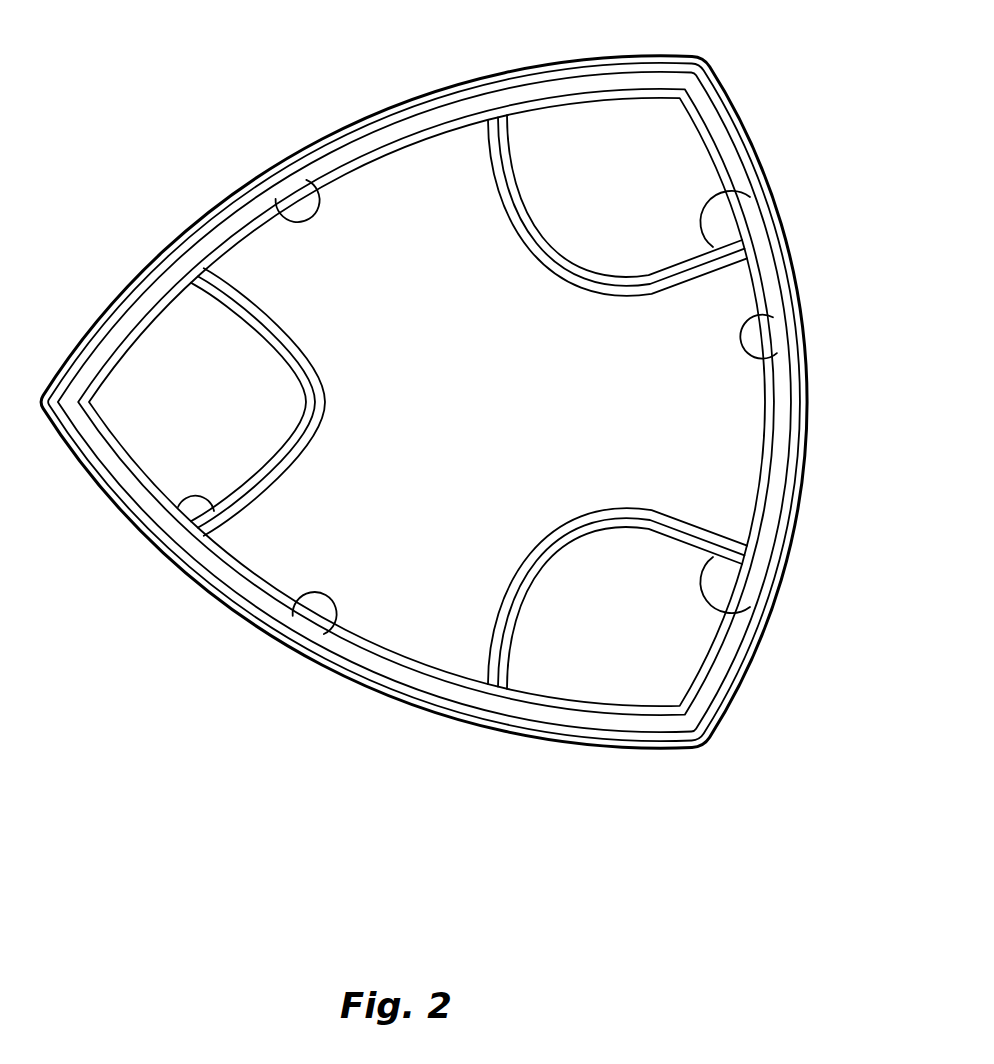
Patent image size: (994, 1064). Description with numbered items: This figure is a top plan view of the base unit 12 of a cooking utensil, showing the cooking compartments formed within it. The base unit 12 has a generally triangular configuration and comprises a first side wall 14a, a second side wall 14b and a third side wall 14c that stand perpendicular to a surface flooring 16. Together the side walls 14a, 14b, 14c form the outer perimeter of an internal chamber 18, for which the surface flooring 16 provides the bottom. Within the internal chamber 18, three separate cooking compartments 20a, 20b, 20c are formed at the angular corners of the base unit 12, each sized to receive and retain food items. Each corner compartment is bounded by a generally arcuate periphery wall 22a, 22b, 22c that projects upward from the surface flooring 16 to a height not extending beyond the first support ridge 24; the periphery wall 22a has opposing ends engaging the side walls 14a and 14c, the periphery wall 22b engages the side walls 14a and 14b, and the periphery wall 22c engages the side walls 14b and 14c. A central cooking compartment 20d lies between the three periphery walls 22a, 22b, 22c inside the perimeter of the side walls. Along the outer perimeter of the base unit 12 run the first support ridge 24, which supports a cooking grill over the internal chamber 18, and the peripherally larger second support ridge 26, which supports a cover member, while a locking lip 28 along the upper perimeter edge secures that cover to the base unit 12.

The base unit 12 is at (464, 398).
The first side wall 14a is at (272, 196).
The second side wall 14b is at (745, 331).
The third side wall 14c is at (316, 595).
The surface flooring 16 is at (527, 418).
The internal chamber 18 is at (638, 506).
The first cooking compartment 20a is at (176, 406).
The second cooking compartment 20b is at (679, 205).
The third cooking compartment 20c is at (678, 577).
The central cooking compartment 20d is at (405, 573).
The periphery wall 22a is at (188, 498).
The periphery wall 22b is at (703, 220).
The periphery wall 22c is at (700, 584).
The first support ridge 24 is at (335, 156).
The second support ridge 26 is at (412, 113).
The locking lip 28 is at (511, 72).